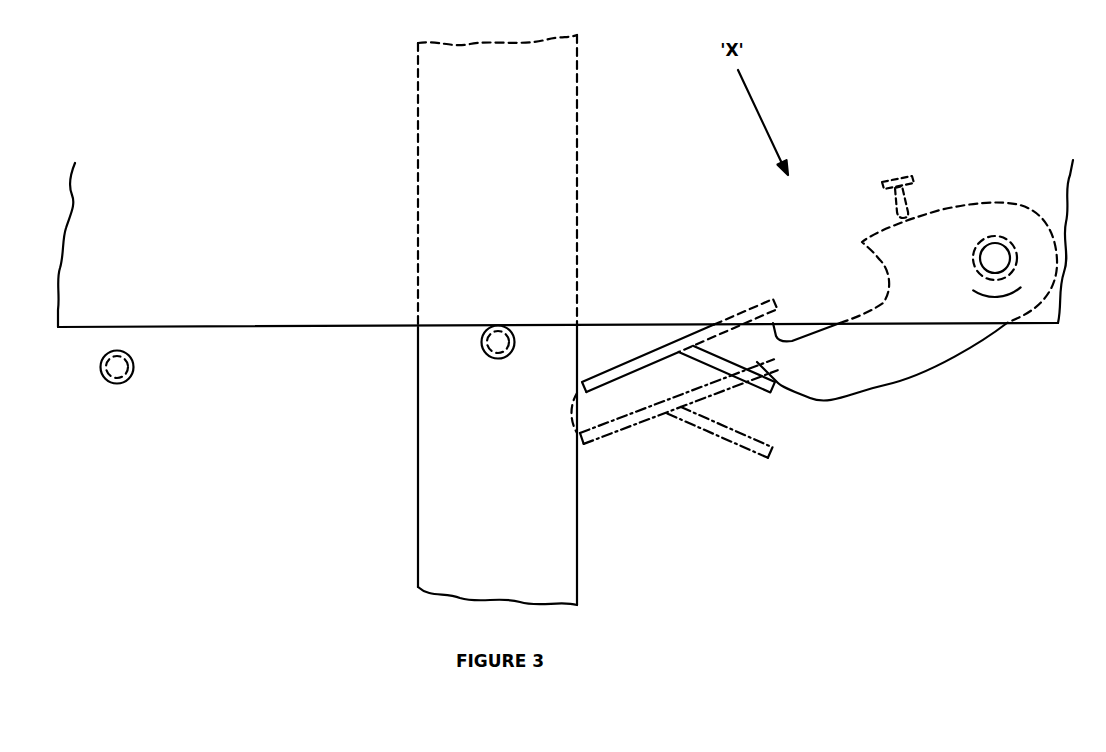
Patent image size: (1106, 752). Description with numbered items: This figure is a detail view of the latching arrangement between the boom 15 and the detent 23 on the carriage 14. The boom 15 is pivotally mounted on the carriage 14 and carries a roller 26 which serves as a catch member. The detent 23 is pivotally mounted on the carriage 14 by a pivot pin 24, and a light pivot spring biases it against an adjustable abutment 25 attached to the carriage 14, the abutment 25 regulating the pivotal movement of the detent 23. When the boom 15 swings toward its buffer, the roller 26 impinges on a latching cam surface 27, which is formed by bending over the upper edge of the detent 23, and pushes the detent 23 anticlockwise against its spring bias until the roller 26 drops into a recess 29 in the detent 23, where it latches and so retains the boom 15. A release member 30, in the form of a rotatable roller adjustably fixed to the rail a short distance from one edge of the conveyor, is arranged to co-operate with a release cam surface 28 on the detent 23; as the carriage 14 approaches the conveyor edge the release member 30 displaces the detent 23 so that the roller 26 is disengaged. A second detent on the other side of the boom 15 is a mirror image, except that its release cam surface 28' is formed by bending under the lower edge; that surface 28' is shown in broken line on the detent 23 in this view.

The carriage 14 is at (230, 260).
The boom 15 is at (467, 532).
The detent 23 is at (930, 350).
The pivot pin 24 is at (996, 255).
The adjustable abutment 25 is at (912, 194).
The roller 26 is at (488, 350).
The latching cam surface 27 is at (752, 312).
The release cam surface 28 is at (759, 442).
The release cam surface 28' is at (679, 449).
The recess 29 is at (860, 308).
The release member 30 is at (113, 376).